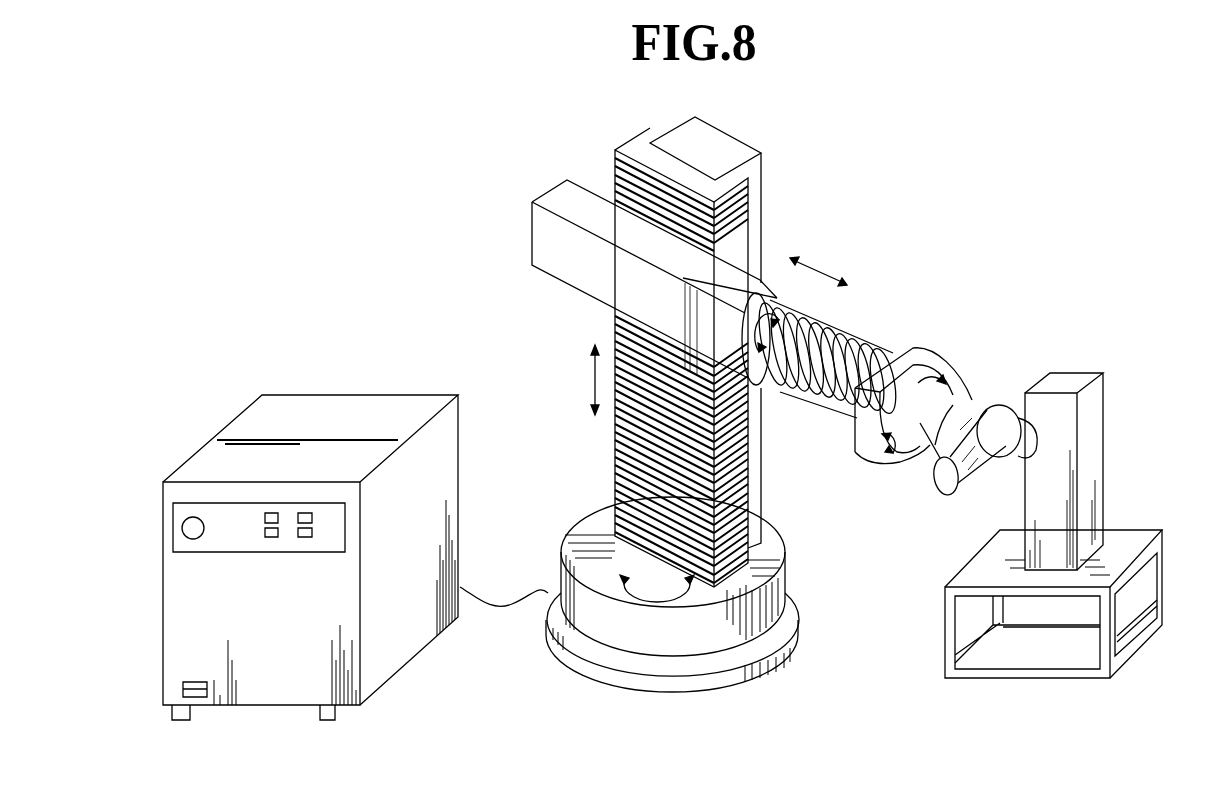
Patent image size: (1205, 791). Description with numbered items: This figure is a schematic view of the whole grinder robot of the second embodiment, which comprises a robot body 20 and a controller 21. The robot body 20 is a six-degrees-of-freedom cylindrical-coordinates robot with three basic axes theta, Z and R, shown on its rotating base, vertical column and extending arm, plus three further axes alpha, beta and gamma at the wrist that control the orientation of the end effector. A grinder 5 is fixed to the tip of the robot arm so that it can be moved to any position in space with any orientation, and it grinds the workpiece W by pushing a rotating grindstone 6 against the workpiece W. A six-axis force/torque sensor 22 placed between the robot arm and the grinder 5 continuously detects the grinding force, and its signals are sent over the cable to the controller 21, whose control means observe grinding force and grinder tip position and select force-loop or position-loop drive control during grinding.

The robot body 20 is at (798, 381).
The controller 21 is at (262, 422).
The 6 axes force/torque sensor 22 is at (970, 404).
The grinder 5 is at (1003, 408).
The rotating grindstone 6 is at (1033, 436).
The workpiece W is at (1093, 429).